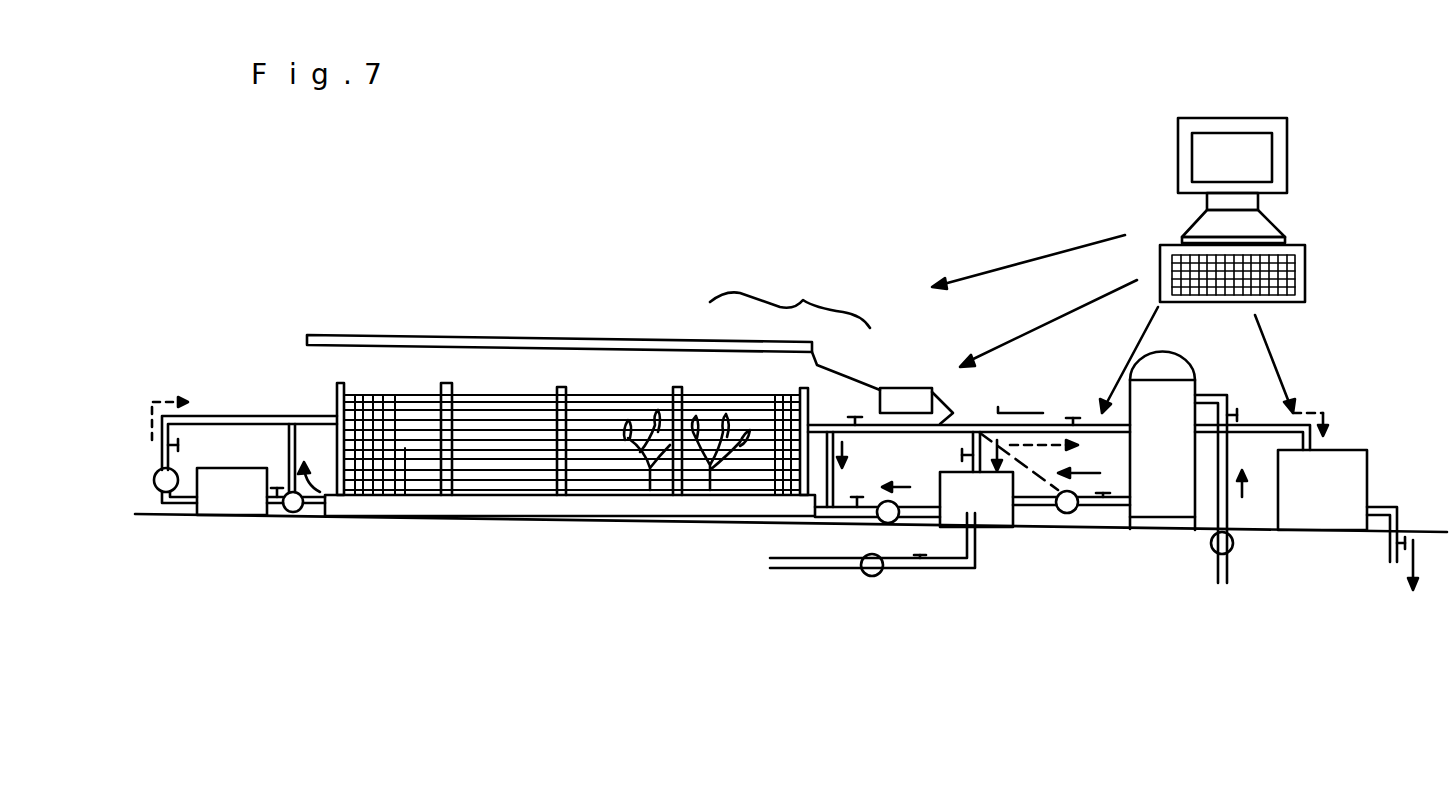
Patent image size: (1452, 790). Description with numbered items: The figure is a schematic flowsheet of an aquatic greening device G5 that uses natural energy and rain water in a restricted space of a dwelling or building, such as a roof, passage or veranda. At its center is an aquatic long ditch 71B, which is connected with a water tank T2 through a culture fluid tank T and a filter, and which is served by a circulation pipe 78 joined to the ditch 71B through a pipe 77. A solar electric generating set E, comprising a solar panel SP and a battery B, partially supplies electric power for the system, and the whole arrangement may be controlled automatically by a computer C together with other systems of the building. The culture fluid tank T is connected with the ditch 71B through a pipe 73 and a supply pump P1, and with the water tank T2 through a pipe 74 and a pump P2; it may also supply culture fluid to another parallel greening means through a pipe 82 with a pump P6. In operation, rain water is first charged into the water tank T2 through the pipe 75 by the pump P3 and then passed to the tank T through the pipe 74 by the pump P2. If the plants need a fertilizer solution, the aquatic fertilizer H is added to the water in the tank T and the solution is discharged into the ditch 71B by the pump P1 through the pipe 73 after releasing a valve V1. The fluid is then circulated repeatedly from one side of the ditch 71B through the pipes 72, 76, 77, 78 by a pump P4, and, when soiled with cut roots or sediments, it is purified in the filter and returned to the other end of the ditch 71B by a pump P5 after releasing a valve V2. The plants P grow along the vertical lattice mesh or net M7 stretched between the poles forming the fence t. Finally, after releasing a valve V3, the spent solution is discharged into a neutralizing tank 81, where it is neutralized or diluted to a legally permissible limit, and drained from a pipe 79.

The aquatic long ditch 71B is at (570, 473).
The pipe 72 is at (325, 514).
The pipe 73 is at (840, 517).
The pipe 74 is at (1103, 505).
The pipe 75 is at (1227, 507).
The pipe 76 is at (290, 455).
The pipe 77 is at (840, 486).
The circulation pipe 78 is at (249, 429).
The pipe 79 is at (1397, 521).
The neutralizing tank 81 is at (1281, 477).
The pipe 82 is at (977, 552).
The solar panel SP is at (603, 330).
The solar electric generating set E is at (790, 295).
The battery B is at (916, 378).
The computer C is at (1278, 163).
The aquatic fertilizer H is at (232, 491).
The culture fluid tank T is at (999, 479).
The water tank T2 is at (1162, 441).
The lattice mesh or net M7 is at (495, 440).
The fence t is at (573, 392).
The plant P is at (650, 470).
The aquatic greening device G5 is at (438, 568).
The supply pump P1 is at (888, 523).
The pump P2 is at (1067, 513).
The pump P3 is at (1222, 554).
The pump P4 is at (293, 513).
The pump P5 is at (166, 492).
The pump P6 is at (875, 577).
The valve V1 is at (860, 496).
The valve V2 is at (277, 504).
The valve V3 is at (842, 402).